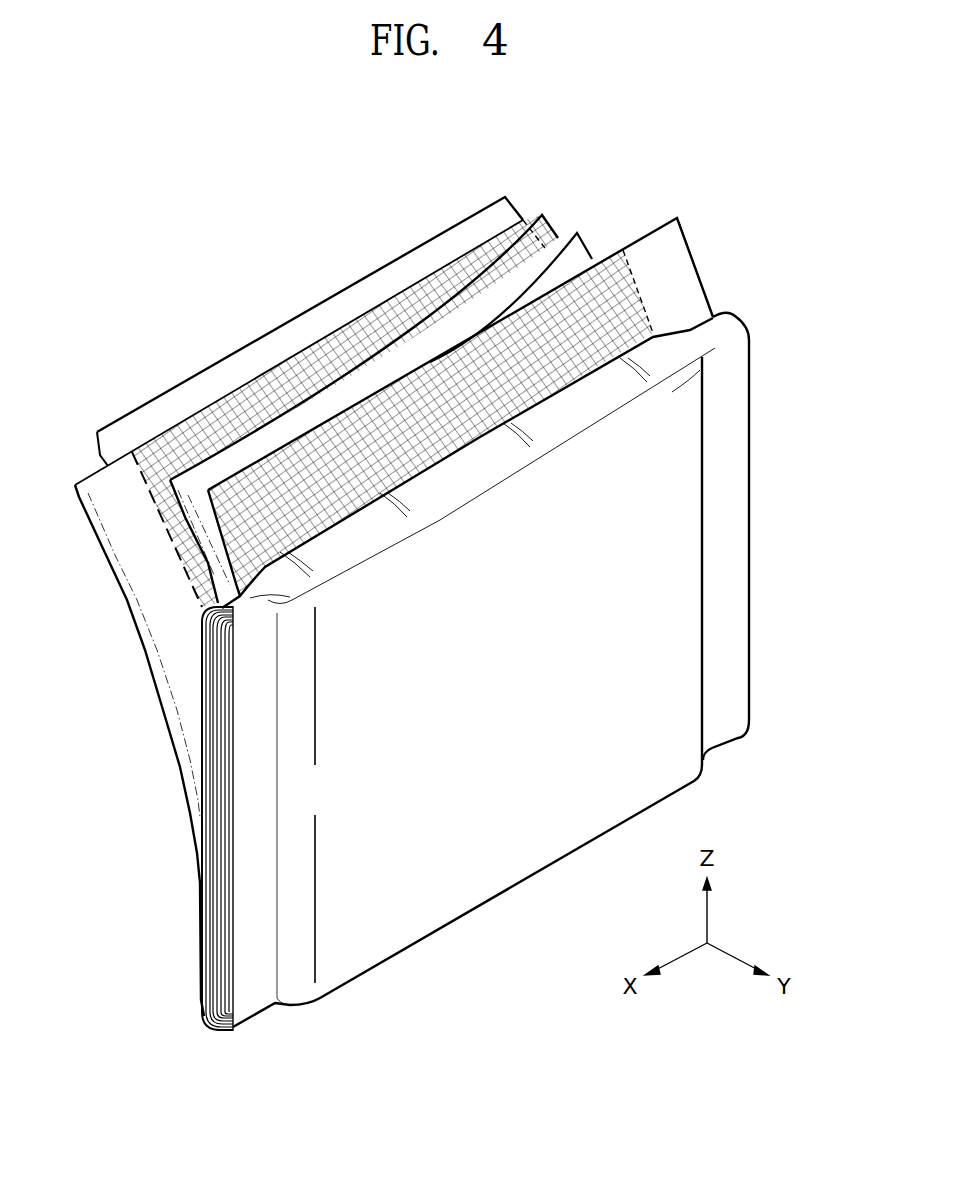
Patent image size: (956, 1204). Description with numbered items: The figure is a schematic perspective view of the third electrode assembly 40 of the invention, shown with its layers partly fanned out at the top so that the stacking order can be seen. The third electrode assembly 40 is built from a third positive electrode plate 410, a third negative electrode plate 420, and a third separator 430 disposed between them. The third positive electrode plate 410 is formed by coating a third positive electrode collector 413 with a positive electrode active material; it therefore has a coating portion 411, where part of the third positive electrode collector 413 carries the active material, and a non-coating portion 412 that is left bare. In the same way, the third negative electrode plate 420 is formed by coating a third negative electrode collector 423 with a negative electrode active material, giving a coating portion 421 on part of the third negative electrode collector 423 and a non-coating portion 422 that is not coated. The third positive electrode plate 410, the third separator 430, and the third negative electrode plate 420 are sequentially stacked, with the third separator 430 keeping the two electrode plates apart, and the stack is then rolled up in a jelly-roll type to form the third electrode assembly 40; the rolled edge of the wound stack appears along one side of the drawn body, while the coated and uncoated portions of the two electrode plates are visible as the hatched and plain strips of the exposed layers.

The third electrode assembly 40 is at (727, 201).
The third positive electrode plate 410 is at (161, 326).
The coating portion 411 is at (180, 443).
The non-coating portion 412 is at (115, 492).
The third positive electrode collector 413 is at (120, 578).
The third negative electrode plate 420 is at (681, 150).
The coating portion 421 is at (572, 310).
The non-coating portion 422 is at (665, 245).
The third negative electrode collector 423 is at (703, 275).
The third separator 430 is at (497, 298).